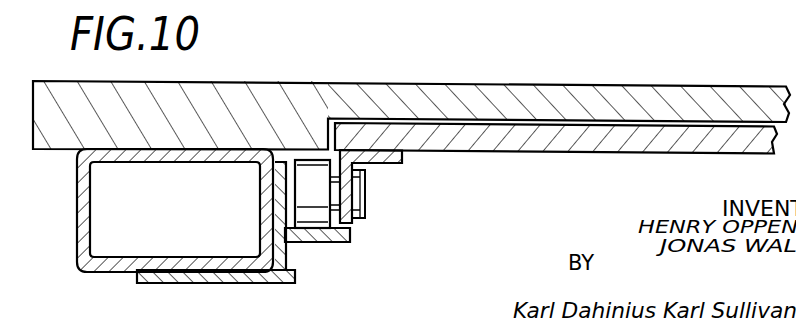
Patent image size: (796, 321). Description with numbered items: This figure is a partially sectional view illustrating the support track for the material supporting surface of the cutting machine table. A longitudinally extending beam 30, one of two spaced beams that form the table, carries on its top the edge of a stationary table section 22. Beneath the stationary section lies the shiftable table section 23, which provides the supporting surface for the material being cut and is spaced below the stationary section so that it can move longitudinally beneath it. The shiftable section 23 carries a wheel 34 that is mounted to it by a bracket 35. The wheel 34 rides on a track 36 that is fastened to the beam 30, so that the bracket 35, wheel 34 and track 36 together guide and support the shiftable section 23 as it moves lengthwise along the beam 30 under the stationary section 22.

The stationary table section 22 is at (287, 98).
The shiftable table section 23 is at (568, 142).
The beam 30 is at (93, 268).
The wheel 34 is at (317, 212).
The bracket 35 is at (387, 157).
The track 36 is at (343, 242).